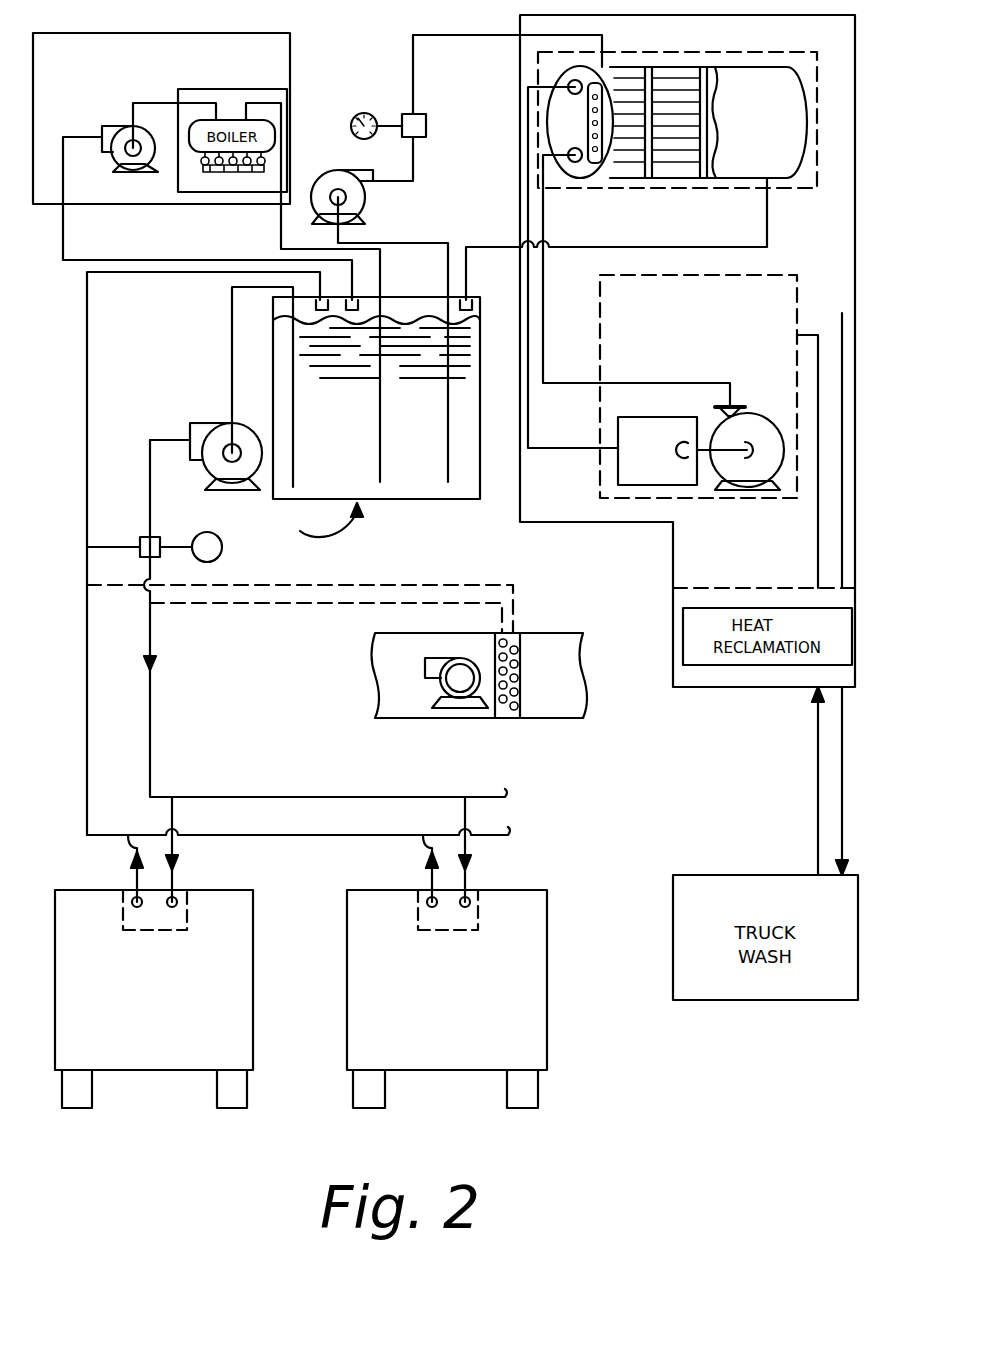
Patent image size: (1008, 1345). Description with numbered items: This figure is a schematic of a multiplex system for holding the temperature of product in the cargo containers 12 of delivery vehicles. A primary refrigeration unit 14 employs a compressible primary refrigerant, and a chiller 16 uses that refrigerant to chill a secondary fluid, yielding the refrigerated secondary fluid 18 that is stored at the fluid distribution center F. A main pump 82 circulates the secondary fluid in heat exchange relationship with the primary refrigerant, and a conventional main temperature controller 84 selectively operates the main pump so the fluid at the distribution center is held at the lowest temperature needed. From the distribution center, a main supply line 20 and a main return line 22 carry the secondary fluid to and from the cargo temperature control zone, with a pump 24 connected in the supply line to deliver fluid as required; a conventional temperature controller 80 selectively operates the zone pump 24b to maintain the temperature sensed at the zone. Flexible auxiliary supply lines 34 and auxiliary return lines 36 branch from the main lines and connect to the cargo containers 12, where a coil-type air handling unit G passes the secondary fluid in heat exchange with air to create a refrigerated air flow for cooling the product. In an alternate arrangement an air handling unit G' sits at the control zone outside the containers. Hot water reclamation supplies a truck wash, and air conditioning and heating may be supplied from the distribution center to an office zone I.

The cargo container 12 is at (167, 1004).
The primary refrigeration unit 14 is at (704, 370).
The chiller 16 is at (641, 250).
The refrigerated secondary fluid 18 is at (352, 451).
The main supply line 20 is at (336, 797).
The main return line 22 is at (87, 796).
The pump 24 is at (190, 436).
The pump 24b is at (216, 424).
The auxiliary supply line 34 is at (178, 846).
The auxiliary return line 36 is at (131, 830).
The temperature controller 80 is at (211, 508).
The main pump 82 is at (366, 193).
The main temperature controller 84 is at (373, 88).
The fluid distribution center F is at (319, 524).
The air handling unit G is at (279, 890).
The air handling unit G' is at (480, 702).
The office zone I is at (758, 875).